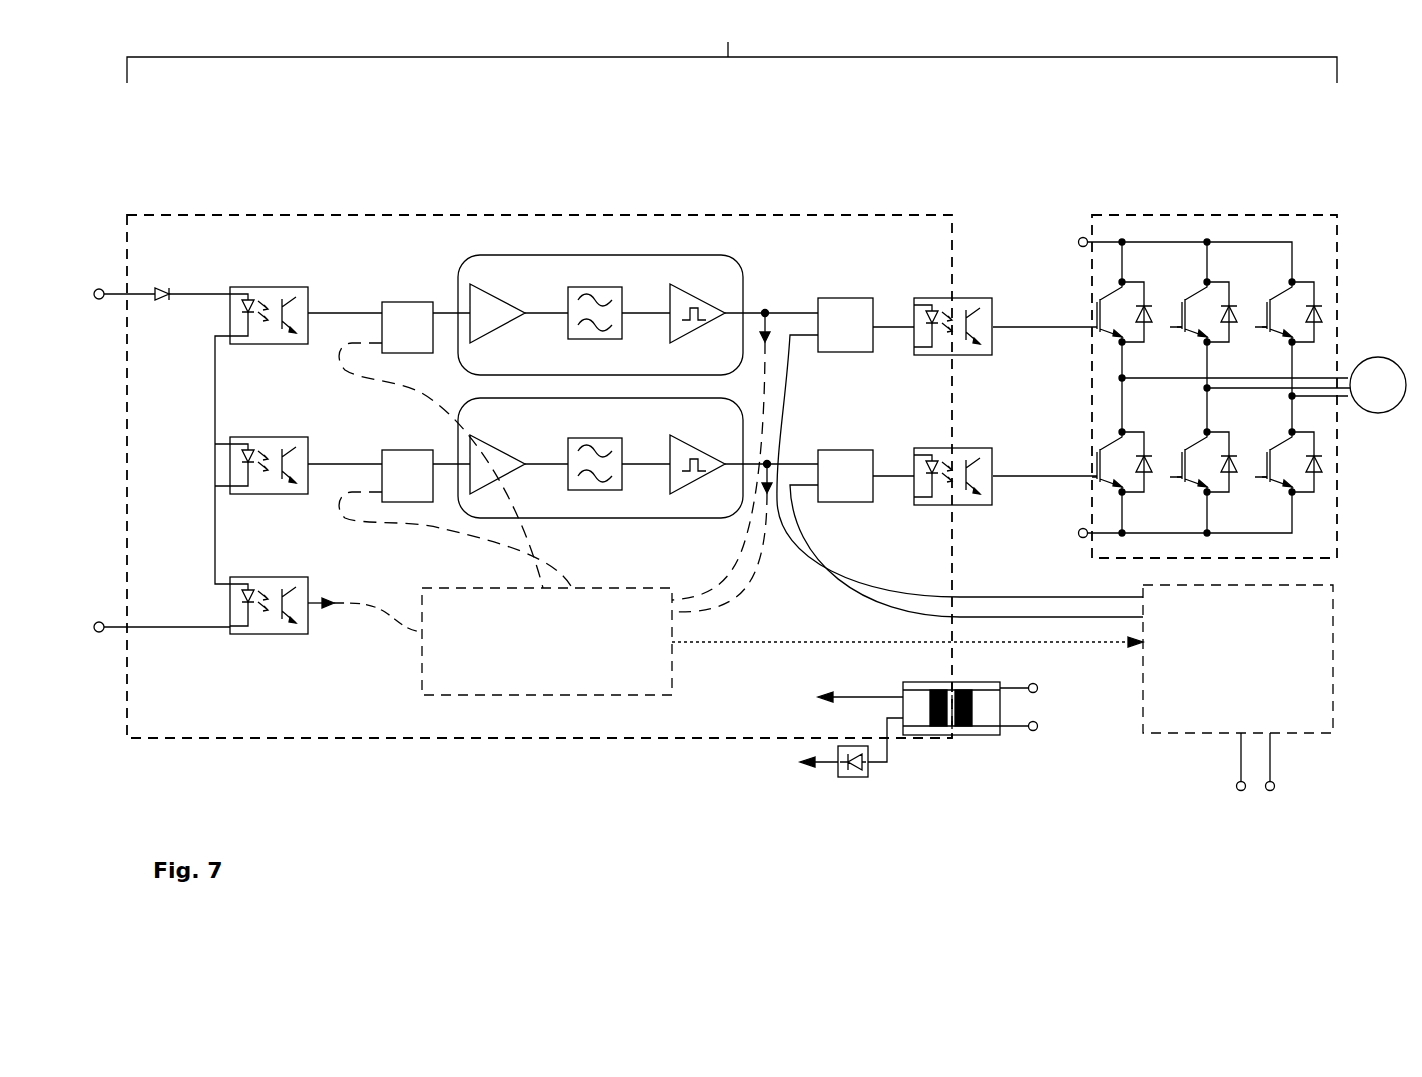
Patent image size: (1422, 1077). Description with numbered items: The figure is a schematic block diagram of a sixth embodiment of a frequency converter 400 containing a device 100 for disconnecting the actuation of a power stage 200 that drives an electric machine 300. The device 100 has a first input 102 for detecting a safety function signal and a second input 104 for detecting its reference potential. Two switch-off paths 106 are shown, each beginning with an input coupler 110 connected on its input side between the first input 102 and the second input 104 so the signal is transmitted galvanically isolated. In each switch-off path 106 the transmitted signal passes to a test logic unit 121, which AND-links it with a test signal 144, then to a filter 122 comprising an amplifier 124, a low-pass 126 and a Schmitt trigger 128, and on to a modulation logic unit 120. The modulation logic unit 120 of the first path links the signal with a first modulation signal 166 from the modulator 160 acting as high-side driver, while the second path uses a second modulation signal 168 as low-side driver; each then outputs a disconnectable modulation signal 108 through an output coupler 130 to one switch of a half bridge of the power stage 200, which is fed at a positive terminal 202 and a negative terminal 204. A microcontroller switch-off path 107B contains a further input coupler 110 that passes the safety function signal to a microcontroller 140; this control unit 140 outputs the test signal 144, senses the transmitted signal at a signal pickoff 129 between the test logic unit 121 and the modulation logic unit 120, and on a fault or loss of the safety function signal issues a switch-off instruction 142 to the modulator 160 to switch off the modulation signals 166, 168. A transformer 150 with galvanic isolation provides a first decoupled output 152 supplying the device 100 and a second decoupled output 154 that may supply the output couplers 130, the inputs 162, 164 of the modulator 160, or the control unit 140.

The frequency converter 400 is at (732, 47).
The device for disconnecting the actuation of a power stage 100 is at (371, 215).
The first input 102 is at (99, 289).
The second input 104 is at (99, 632).
The switch-off path 106 is at (198, 325).
The microcontroller switch-off path 107B is at (198, 600).
The modulation signal which can be disconnected 108 is at (1027, 476).
The input coupler 110 is at (265, 344).
The modulation logic unit 120 is at (858, 352).
The test logic unit 121 is at (418, 450).
The filter 122 is at (487, 255).
The amplifier 124 is at (513, 452).
The low-pass 126 is at (610, 438).
The Schmitt trigger 128 is at (703, 447).
The signal pickoff 129 is at (768, 445).
The output coupler 130 is at (958, 357).
The microcontroller 140 is at (545, 697).
The switch-off instruction 142 is at (815, 652).
The test signal 144 is at (416, 395).
The transformer 150 is at (972, 736).
The first galvanically decoupled output 152 is at (867, 699).
The second decoupled output 154 is at (832, 770).
The modulator 160 is at (1172, 735).
The input of the modulator 162 is at (1238, 758).
The input of the modulator 164 is at (1273, 758).
The first modulation signal 166 is at (790, 338).
The second modulation signal 168 is at (800, 490).
The power stage 200 is at (1176, 215).
The positive terminal 202 is at (1083, 237).
The negative terminal 204 is at (1083, 538).
The electric machine 300 is at (1378, 357).